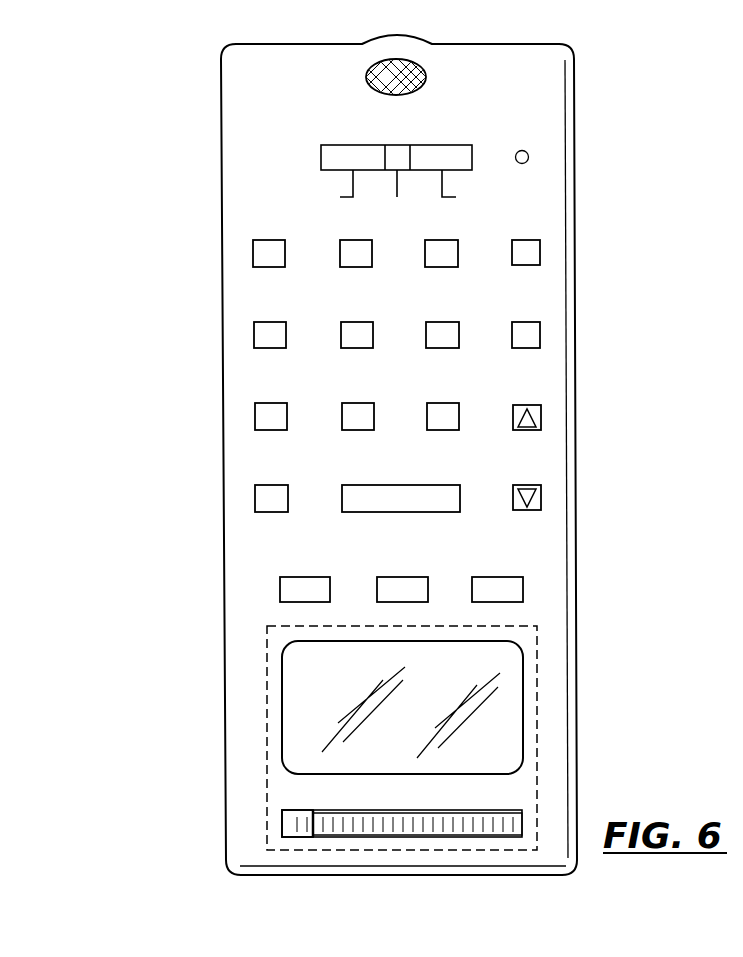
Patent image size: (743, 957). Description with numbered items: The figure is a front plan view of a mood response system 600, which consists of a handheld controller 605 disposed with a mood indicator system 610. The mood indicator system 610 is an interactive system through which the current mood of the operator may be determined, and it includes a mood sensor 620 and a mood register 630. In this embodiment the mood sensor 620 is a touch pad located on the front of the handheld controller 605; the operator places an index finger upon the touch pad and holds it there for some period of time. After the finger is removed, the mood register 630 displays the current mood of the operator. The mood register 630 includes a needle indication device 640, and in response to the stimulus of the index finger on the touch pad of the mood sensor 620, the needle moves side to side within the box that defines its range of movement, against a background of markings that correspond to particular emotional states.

The mood response system 600 is at (582, 86).
The handheld controller 605 is at (520, 127).
The mood indicator system 610 is at (537, 665).
The mood sensor 620 is at (493, 707).
The mood register 630 is at (495, 826).
The needle indication device 640 is at (296, 815).